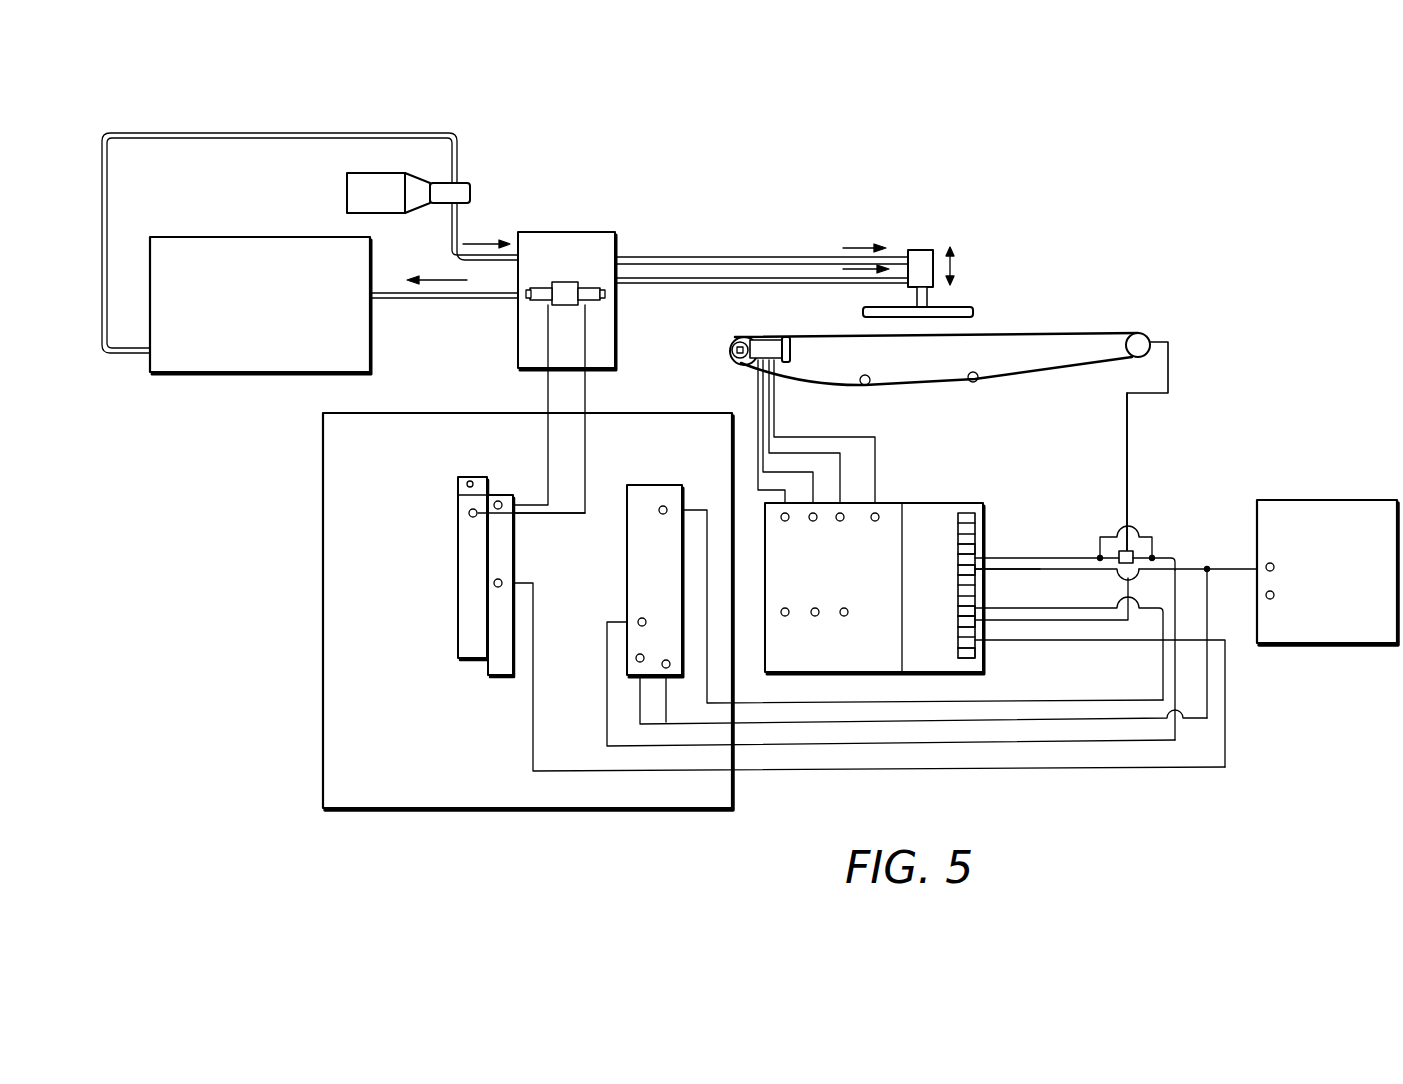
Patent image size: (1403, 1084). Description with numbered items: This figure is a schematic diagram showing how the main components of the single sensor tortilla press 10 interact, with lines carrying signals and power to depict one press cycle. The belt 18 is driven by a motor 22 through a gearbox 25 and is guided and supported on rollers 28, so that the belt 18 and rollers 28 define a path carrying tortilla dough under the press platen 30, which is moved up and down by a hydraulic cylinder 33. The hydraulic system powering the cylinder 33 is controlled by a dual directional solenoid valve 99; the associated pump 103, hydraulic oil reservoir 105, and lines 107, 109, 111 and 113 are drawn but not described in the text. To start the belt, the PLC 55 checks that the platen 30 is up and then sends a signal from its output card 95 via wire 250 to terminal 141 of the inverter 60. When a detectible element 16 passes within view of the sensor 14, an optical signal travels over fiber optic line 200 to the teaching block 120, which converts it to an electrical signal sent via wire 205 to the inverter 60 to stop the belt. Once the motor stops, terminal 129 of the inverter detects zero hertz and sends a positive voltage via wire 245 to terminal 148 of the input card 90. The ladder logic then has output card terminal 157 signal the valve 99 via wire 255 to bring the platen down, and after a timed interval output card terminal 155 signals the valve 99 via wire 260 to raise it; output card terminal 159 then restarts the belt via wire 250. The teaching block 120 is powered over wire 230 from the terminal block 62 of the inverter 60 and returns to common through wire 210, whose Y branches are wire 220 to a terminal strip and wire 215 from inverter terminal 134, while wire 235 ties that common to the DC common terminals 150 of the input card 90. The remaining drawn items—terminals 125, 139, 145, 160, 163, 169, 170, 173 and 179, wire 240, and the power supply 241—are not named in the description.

The single sensor tortilla press 10 is at (1013, 190).
The sensor 14 is at (1168, 340).
The detectible element 16 is at (1083, 333).
The belt 18 is at (1108, 368).
The motor 22 is at (790, 338).
The gearbox 25 is at (729, 346).
The rollers 28 is at (1140, 345).
The press platen 30 is at (975, 308).
The hydraulic cylinder 33 is at (922, 250).
The PLC 55 is at (323, 565).
The inverter 60 is at (874, 556).
The terminal block 62 is at (983, 513).
The input card 90 is at (615, 573).
The output card 95 is at (433, 568).
The dual directional solenoid valve 99 is at (566, 288).
The pump motor 103 is at (471, 183).
The hydraulic oil reservoir 105 is at (248, 237).
The supply line 107 is at (263, 141).
The return line 109 is at (433, 300).
The hydraulic line 111 is at (685, 257).
The hydraulic line 113 is at (679, 284).
The teaching block 120 is at (1133, 552).
The terminal 125 is at (978, 548).
The terminal 10 output 129 is at (963, 612).
The terminal 6 134 is at (963, 572).
The terminal 139 is at (963, 620).
The terminal 13 141 is at (980, 654).
The output terminal 145 is at (640, 620).
The number 1 of the input card 148 is at (663, 507).
The DC common terminals 150 is at (666, 666).
The number 1 of the output card 155 is at (470, 512).
The number 0 of the output card 157 is at (500, 503).
The number 8 of the output card 159 is at (500, 582).
The terminal 160 is at (785, 617).
The terminal 163 is at (815, 617).
The terminal 169 is at (844, 617).
The terminal 170 is at (785, 522).
The terminal 173 is at (813, 522).
The terminal 179 is at (840, 522).
The fiber optic line 200 is at (1130, 466).
The wire 205 is at (1100, 556).
The wire 210 is at (1118, 570).
The wire 215 is at (1030, 575).
The wire 220 is at (1190, 567).
The wire 230 is at (1127, 590).
The wire 235 is at (1212, 636).
The wire 240 is at (1207, 567).
The power supply 241 is at (1317, 500).
The wire 245 is at (1163, 675).
The wire 250 is at (1075, 641).
The wire 255 is at (548, 385).
The wire 260 is at (585, 388).